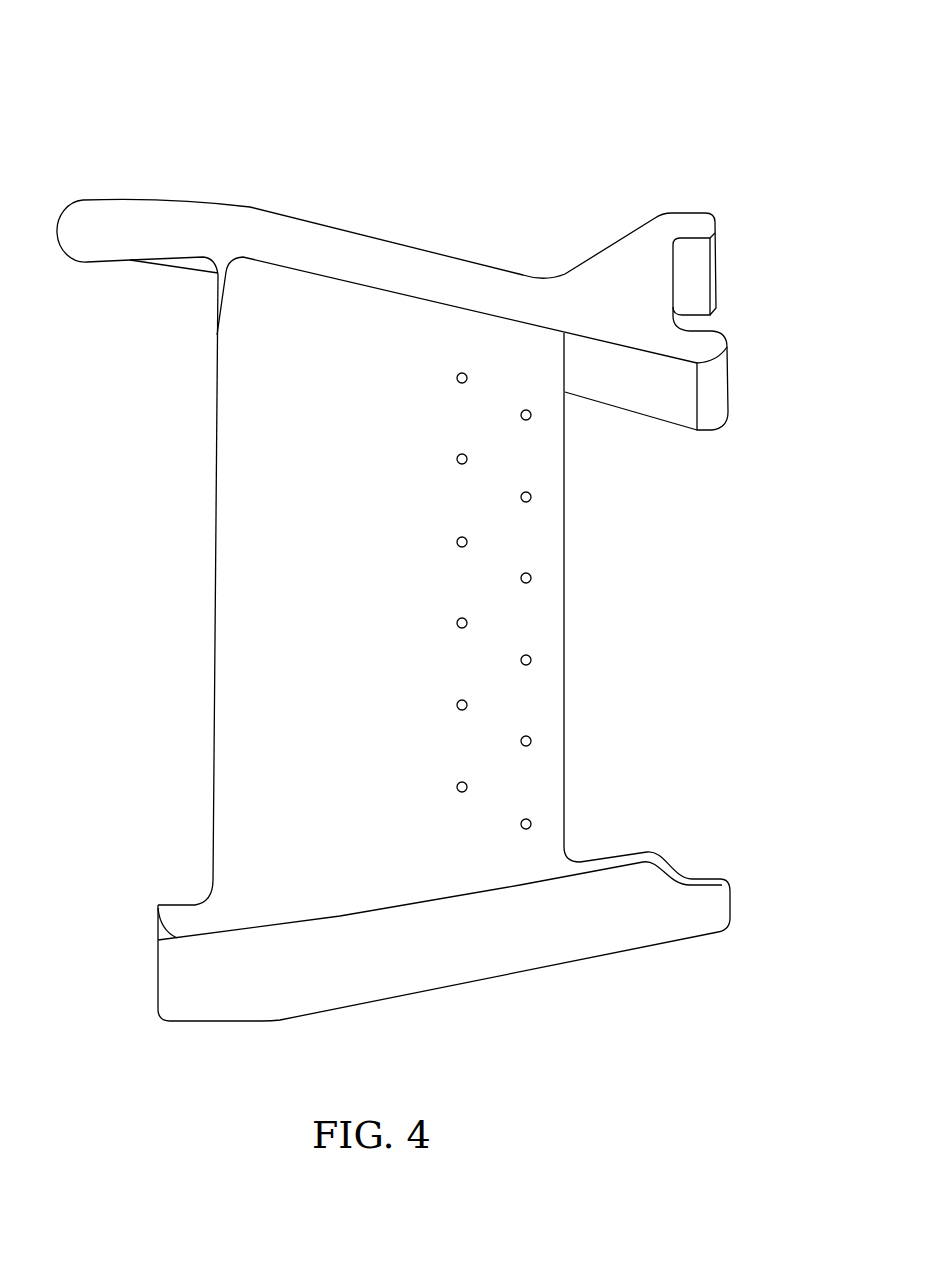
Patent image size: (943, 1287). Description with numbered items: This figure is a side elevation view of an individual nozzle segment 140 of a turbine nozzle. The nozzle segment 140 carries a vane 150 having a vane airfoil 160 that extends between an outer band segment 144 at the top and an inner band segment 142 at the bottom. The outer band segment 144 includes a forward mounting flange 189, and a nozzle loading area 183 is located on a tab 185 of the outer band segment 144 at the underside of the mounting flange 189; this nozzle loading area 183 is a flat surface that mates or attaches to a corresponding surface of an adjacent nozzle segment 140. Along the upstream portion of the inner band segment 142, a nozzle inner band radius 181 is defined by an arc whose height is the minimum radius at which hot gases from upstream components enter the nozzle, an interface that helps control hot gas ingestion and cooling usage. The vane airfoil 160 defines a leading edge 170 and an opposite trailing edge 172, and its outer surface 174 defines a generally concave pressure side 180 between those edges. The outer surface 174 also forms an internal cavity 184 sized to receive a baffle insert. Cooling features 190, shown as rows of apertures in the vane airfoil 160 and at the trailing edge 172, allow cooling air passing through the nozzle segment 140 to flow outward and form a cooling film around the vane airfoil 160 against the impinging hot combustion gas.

The nozzle segment 140 is at (132, 65).
The vane 150 is at (326, 150).
The outer band segment 144 is at (418, 248).
The mounting flange 189 is at (612, 212).
The nozzle loading area 183 is at (702, 262).
The tab 185 is at (738, 312).
The trailing edge 172 is at (217, 357).
The vane airfoil 160 is at (217, 468).
The outer surface 174 is at (237, 558).
The pressure side 180 is at (235, 708).
The leading edge 170 is at (565, 558).
The cooling features 190 is at (540, 632).
The internal cavity 184 is at (247, 822).
The inner band segment 142 is at (160, 912).
The nozzle inner band radius 181 is at (706, 878).